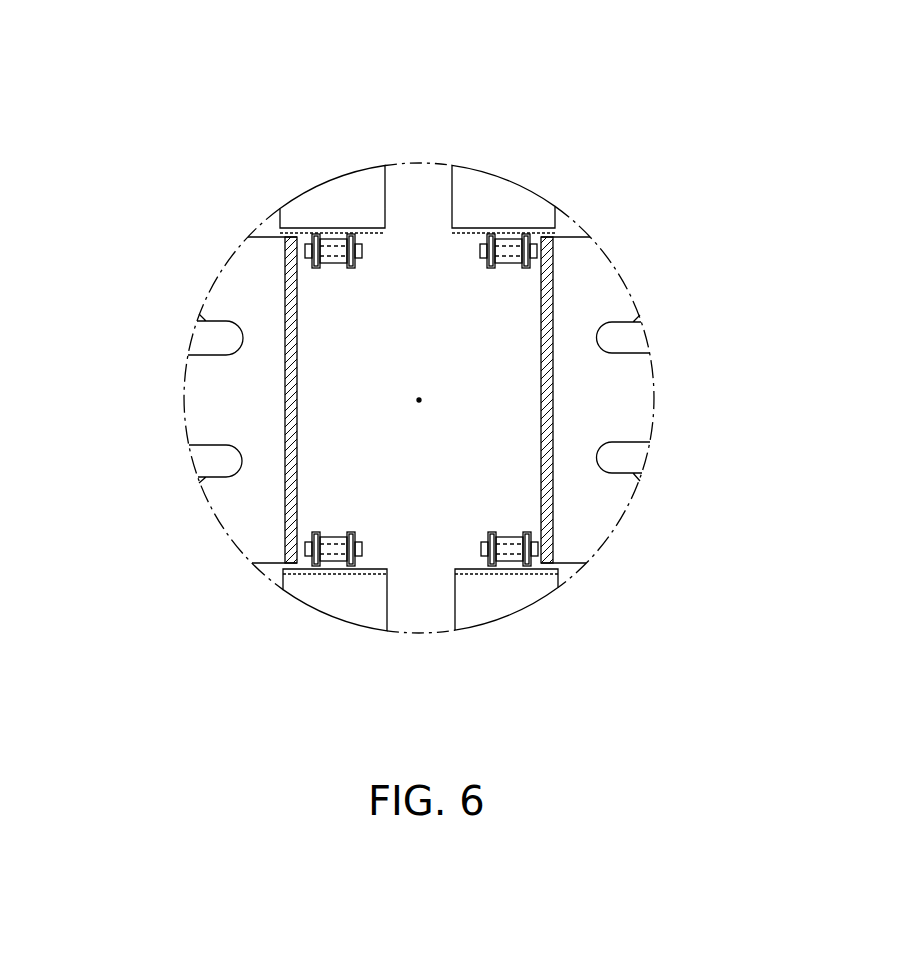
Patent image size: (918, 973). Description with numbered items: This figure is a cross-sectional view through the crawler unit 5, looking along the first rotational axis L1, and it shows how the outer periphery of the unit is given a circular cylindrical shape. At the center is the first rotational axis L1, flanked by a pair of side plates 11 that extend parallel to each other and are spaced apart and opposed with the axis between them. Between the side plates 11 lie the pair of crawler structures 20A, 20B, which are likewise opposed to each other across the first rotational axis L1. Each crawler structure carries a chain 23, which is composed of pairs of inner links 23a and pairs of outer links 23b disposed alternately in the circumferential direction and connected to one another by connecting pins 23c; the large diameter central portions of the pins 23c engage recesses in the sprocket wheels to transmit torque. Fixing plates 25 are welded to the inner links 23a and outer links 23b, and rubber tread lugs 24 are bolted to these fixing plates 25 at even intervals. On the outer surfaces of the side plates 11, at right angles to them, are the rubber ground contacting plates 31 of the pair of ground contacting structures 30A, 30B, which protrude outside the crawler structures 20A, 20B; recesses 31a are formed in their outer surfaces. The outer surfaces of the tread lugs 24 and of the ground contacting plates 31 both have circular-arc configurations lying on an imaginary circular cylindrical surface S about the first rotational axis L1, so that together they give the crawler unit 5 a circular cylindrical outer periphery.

The crawler unit 5 is at (628, 228).
The imaginary circular cylindrical surface S is at (442, 163).
The first rotational axis L1 is at (420, 400).
The side plate 11 is at (298, 460).
The crawler structure 20A is at (334, 167).
The crawler structure 20B is at (504, 164).
The chain 23 is at (358, 274).
The inner link 23a is at (488, 265).
The outer link 23b is at (484, 265).
The connecting pin 23c is at (478, 244).
The tread lug 24 is at (333, 213).
The fixing plate 25 is at (531, 222).
The ground contacting structure 30A is at (170, 400).
The ground contacting structure 30B is at (670, 392).
The ground contacting plate 31 is at (232, 302).
The recess 31a is at (215, 465).